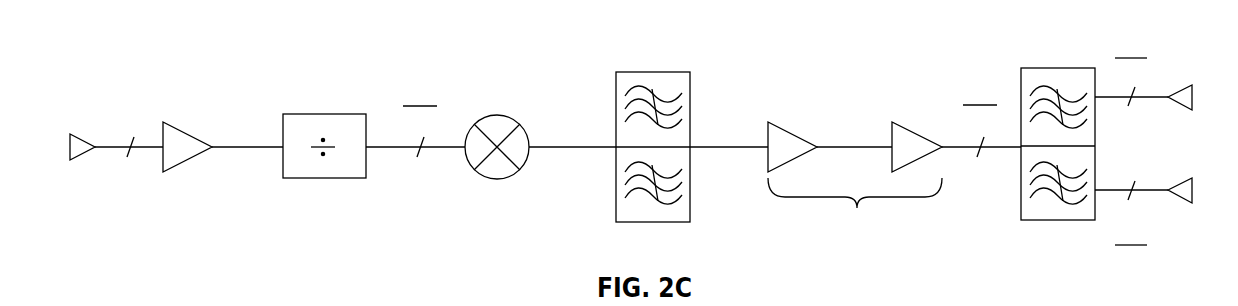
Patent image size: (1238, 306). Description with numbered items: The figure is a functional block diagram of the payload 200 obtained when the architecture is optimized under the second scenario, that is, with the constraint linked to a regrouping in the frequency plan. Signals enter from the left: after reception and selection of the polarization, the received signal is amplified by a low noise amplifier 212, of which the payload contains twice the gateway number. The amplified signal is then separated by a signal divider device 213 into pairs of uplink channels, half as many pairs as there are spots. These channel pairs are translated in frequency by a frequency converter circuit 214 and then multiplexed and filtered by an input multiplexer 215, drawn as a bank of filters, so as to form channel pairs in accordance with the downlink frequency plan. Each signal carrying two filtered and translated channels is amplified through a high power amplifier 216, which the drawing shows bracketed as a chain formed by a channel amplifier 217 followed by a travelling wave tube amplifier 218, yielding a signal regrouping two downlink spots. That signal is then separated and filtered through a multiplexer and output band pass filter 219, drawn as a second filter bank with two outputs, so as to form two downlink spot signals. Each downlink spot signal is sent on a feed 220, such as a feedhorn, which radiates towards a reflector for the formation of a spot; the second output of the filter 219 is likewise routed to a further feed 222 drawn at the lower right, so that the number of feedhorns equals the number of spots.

The payload 200 is at (154, 40).
The low noise amplifier 212 is at (172, 125).
The signal divider device 213 is at (322, 113).
The frequency converter circuit 214 is at (500, 114).
The input multiplexer 215 is at (643, 72).
The high power amplifier 216 is at (855, 211).
The channel amplifier 217 is at (778, 124).
The travelling wave tube amplifier 218 is at (915, 124).
The multiplexer and output band pass filter 219 is at (1052, 68).
The feed 220 is at (1180, 84).
The output port 222 is at (1180, 205).